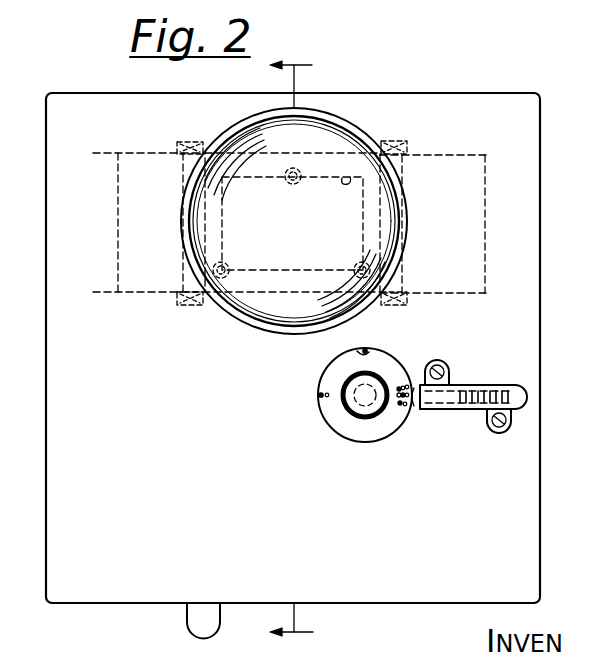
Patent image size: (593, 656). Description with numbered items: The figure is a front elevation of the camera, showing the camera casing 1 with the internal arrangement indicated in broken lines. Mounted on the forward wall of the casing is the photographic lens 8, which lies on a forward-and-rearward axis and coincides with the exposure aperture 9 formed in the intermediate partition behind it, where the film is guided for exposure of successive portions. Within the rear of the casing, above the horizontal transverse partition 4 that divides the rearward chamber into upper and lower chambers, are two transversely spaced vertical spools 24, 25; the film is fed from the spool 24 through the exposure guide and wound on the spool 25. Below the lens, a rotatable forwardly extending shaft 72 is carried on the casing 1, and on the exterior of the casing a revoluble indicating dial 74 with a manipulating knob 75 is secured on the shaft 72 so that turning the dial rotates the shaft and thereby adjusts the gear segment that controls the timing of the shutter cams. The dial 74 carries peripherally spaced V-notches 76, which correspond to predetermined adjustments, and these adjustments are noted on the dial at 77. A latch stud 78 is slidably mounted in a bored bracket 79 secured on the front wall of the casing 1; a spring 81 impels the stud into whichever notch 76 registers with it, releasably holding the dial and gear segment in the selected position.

The camera casing 1 is at (52, 143).
The horizontal transverse partition 4 is at (291, 347).
The photographic lens 8 is at (240, 150).
The exposure aperture 9 is at (360, 166).
The spool 24 is at (491, 154).
The spool 25 is at (108, 153).
The shaft 72 is at (352, 404).
The indicating dial 74 is at (332, 370).
The manipulating knob 75 is at (344, 400).
The V-notches 76 is at (365, 349).
The dial markings 77 is at (372, 356).
The latch stud 78 is at (431, 368).
The bored bracket 79 is at (514, 386).
The spring 81 is at (480, 420).